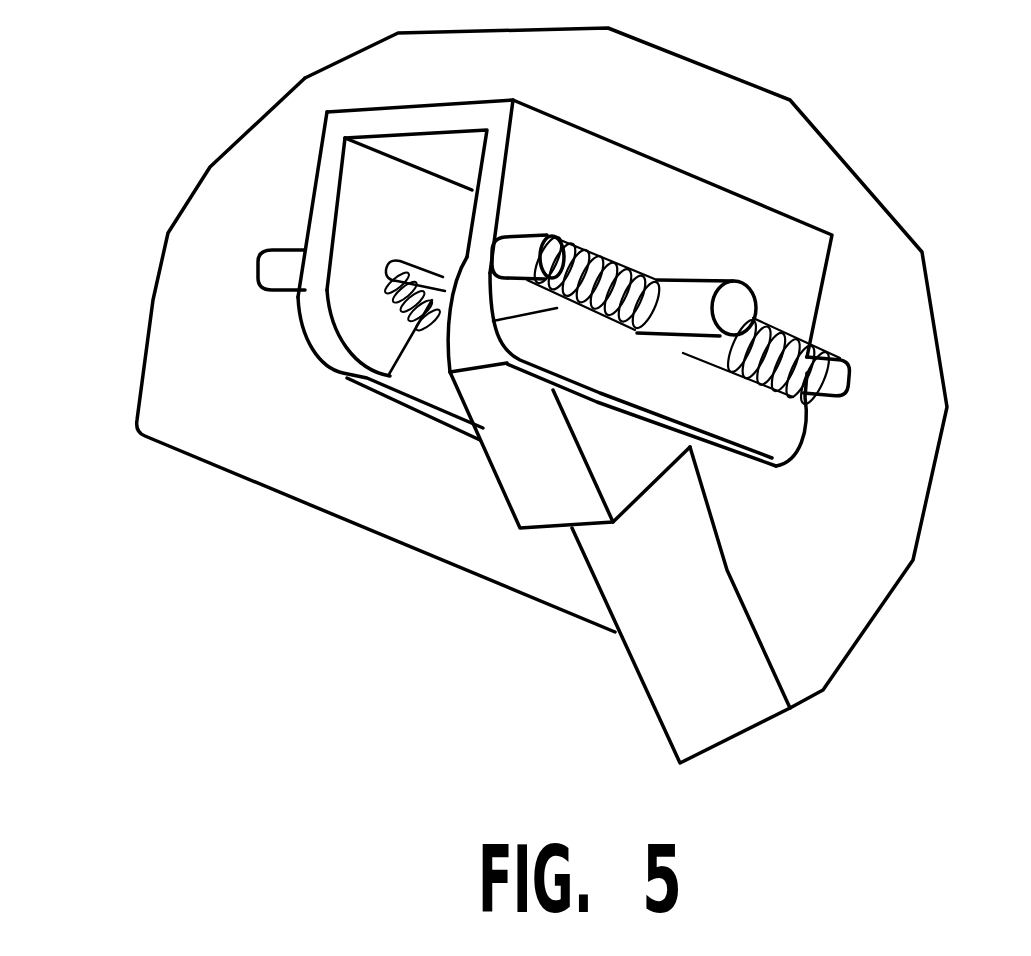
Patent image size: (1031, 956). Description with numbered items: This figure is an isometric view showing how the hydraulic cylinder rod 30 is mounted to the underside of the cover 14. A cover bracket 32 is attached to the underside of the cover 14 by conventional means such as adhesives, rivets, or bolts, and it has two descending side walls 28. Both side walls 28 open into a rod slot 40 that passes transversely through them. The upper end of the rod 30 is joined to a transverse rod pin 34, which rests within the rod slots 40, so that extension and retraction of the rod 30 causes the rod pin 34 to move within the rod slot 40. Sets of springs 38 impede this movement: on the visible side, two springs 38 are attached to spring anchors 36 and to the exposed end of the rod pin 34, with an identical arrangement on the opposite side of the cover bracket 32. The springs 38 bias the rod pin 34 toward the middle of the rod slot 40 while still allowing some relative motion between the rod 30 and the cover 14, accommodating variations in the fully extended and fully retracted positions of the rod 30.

The cover 14 is at (773, 133).
The side walls 28 is at (300, 335).
The rod 30 is at (672, 708).
The cover bracket 32 is at (397, 118).
The rod pin 34 is at (755, 298).
The spring anchors 36 is at (257, 267).
The springs 38 is at (607, 257).
The rod slot 40 is at (417, 330).